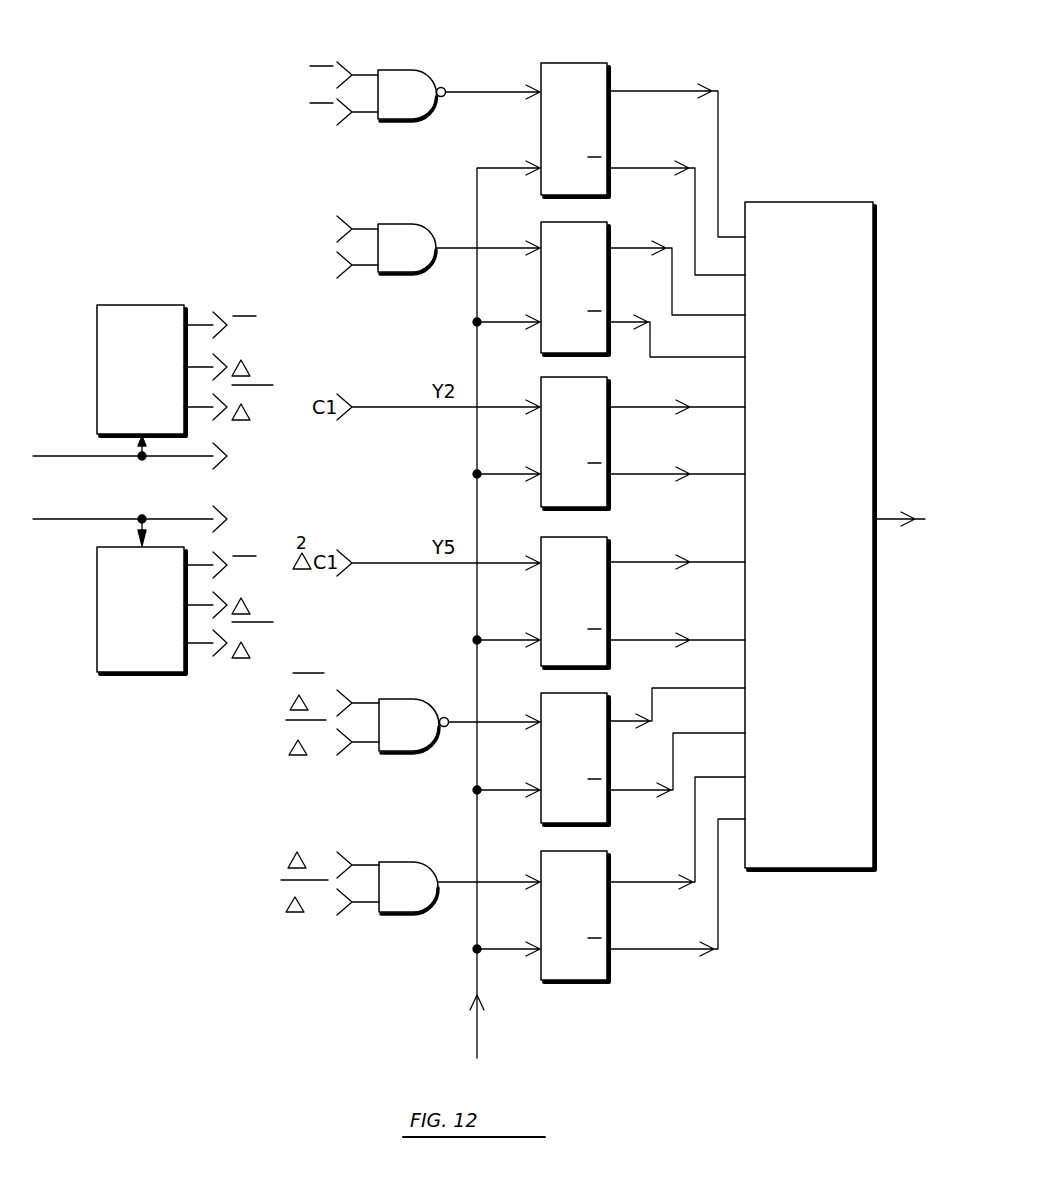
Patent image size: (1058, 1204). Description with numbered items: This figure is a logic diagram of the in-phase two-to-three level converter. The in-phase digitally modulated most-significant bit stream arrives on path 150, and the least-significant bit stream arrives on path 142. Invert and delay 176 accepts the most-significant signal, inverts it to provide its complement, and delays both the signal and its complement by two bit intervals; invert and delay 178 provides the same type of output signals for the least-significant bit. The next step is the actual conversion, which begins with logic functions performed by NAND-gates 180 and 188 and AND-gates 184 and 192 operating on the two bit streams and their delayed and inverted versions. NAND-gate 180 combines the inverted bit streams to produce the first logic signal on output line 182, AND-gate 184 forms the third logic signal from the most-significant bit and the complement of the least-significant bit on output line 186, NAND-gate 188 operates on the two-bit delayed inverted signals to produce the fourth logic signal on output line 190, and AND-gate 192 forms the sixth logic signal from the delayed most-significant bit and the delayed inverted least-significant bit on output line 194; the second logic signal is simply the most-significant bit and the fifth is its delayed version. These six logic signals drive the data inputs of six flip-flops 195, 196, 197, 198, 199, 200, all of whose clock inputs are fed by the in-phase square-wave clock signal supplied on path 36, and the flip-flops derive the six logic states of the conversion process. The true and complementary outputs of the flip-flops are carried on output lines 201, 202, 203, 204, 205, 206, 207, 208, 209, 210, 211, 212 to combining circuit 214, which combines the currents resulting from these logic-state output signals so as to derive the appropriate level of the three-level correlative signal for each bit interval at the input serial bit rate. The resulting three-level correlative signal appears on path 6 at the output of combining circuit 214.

The path for 3-level correlative signal 6 is at (884, 519).
The path for in-phase clock signal T2 36 is at (478, 1040).
The path for C2 bit stream 142 is at (83, 519).
The path for C1 bit stream 150 is at (84, 456).
The invert and delay 176 is at (138, 305).
The invert and delay 178 is at (140, 674).
The NAND-gate 180 is at (392, 70).
The output line Y1 182 is at (502, 96).
The AND-gate 184 is at (392, 224).
The output line Y3 186 is at (454, 258).
The NAND-gate 188 is at (393, 699).
The output line Y4 190 is at (456, 732).
The AND-gate 192 is at (393, 862).
The output line Y6 194 is at (458, 893).
The flip-flop 195 is at (584, 63).
The flip-flop 196 is at (584, 222).
The flip-flop 197 is at (584, 377).
The flip-flop 198 is at (584, 537).
The flip-flop 199 is at (584, 693).
The flip-flop 200 is at (586, 851).
The flip-flop output line 201 is at (632, 91).
The flip-flop output line 202 is at (618, 168).
The flip-flop output line 203 is at (629, 248).
The flip-flop output line 204 is at (673, 357).
The flip-flop output line 205 is at (648, 407).
The flip-flop output line 206 is at (652, 474).
The flip-flop output line 207 is at (650, 562).
The flip-flop output line 208 is at (652, 640).
The flip-flop output line 209 is at (672, 688).
The flip-flop output line 210 is at (685, 733).
The flip-flop output line 211 is at (640, 882).
The flip-flop output line 212 is at (641, 949).
The combining circuit 214 is at (788, 202).